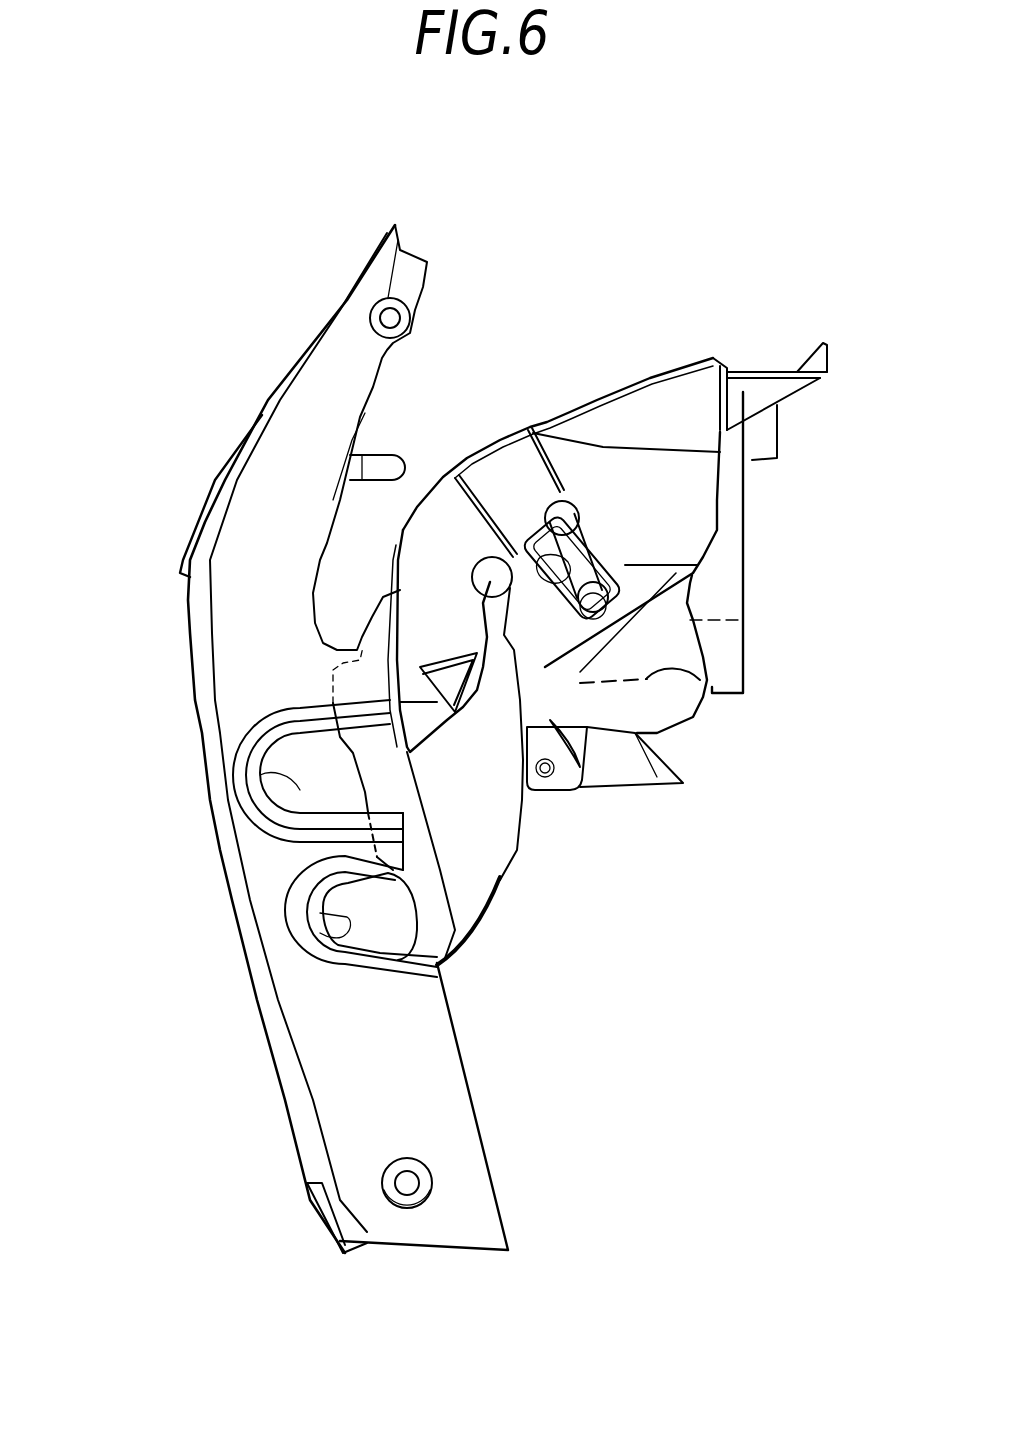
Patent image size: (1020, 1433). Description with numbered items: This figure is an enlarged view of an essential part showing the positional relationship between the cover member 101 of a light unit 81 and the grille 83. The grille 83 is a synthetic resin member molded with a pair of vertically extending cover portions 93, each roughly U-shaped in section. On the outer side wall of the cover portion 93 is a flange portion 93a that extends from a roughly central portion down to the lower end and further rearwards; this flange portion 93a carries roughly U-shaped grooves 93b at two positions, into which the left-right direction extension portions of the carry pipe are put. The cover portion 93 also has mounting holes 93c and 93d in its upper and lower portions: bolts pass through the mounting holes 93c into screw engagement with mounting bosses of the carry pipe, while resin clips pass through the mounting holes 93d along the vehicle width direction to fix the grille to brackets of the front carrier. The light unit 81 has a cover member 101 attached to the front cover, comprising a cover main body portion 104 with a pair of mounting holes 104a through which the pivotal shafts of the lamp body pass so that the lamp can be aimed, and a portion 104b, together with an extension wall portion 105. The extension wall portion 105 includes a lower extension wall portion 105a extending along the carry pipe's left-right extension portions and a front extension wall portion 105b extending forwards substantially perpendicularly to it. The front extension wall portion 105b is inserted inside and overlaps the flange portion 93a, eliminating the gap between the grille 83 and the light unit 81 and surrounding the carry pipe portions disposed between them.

The light unit 81 is at (666, 372).
The grille 83 is at (250, 431).
The cover portion 93 is at (240, 550).
The flange portion 93a is at (390, 1045).
The U-shaped groove 93b is at (360, 947).
The mounting hole 93c is at (408, 1183).
The mounting hole 93d is at (390, 315).
The cover member 101 is at (747, 623).
The cover main body portion 104 is at (723, 593).
The mounting hole 104a is at (568, 555).
The tab portion 104b is at (577, 740).
The extension wall portion 105 is at (562, 805).
The lower extension wall portion 105a is at (472, 857).
The front extension wall portion 105b is at (433, 935).